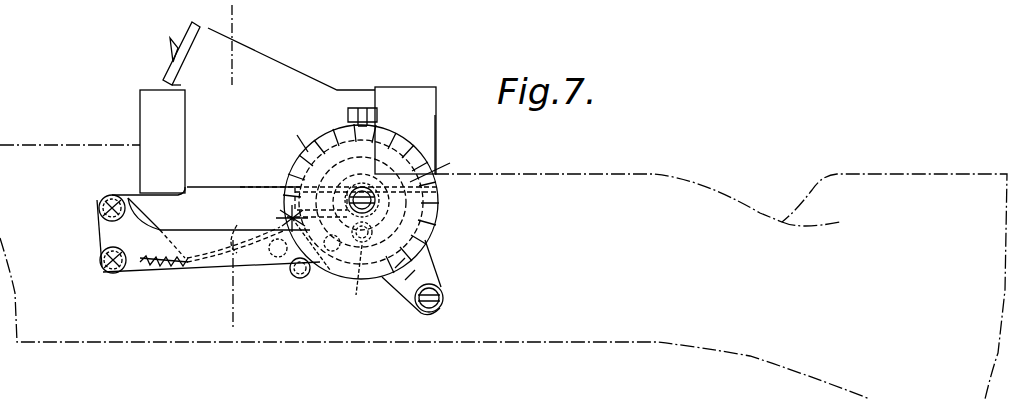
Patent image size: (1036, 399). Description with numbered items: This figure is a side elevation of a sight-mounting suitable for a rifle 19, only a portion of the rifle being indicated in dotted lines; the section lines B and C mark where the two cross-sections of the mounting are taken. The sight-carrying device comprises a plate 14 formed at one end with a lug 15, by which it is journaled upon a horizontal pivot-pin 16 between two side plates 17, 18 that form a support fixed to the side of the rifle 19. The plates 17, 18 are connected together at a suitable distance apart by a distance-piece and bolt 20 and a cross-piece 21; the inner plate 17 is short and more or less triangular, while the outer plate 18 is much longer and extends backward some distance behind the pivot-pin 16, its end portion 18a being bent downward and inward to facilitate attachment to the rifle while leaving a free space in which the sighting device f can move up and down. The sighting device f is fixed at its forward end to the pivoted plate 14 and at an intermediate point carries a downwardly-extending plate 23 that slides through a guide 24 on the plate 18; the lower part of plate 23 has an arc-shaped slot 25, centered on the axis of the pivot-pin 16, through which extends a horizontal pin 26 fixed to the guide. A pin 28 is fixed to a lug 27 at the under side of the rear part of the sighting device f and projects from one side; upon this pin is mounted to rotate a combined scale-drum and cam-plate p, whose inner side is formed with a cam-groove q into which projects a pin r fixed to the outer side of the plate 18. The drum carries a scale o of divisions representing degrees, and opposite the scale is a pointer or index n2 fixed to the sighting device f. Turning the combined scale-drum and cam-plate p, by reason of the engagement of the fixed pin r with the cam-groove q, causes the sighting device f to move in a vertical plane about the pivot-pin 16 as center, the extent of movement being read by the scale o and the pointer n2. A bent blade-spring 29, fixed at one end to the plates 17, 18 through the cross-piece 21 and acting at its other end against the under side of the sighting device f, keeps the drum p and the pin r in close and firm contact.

The plate 14 is at (158, 190).
The lug 15 is at (100, 217).
The horizontal pivot-pin 16 is at (100, 202).
The inner side plate 17 is at (140, 213).
The outer side plate 18 is at (135, 248).
The end portion of outer plate 18a is at (407, 277).
The rifle 19 is at (503, 272).
The distance-piece and bolt 20 is at (102, 262).
The cross-piece 21 is at (157, 267).
The downwardly-extending plate 23 is at (290, 271).
The guide 24 is at (283, 220).
The arc-shaped slot 25 is at (302, 263).
The horizontal pin 26 is at (288, 215).
The lug 27 is at (438, 214).
The pin 28 is at (362, 187).
The bent blade-spring 29 is at (235, 235).
The section line B B is at (243, 168).
The section line C C is at (288, 290).
The sighting device f is at (258, 117).
The combined scale-drum and cam-plate p is at (397, 155).
The cam-groove q is at (436, 165).
The scale for degrees o is at (437, 193).
The pin r is at (353, 277).
The pointer or index n2 is at (367, 115).